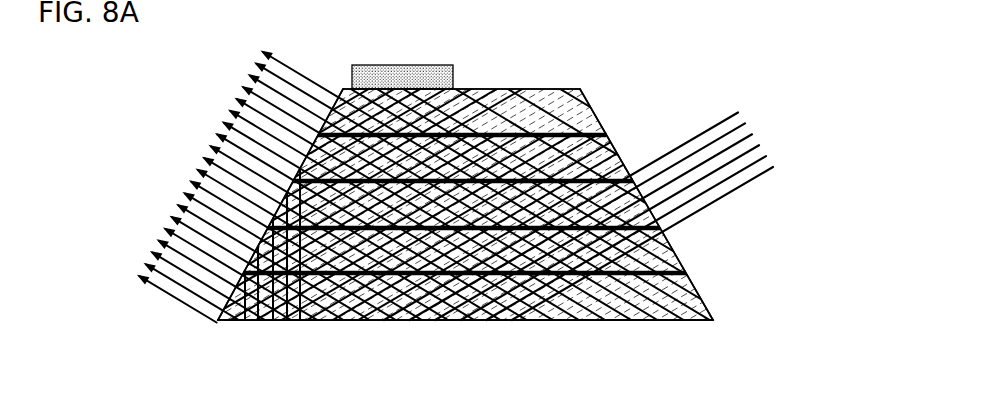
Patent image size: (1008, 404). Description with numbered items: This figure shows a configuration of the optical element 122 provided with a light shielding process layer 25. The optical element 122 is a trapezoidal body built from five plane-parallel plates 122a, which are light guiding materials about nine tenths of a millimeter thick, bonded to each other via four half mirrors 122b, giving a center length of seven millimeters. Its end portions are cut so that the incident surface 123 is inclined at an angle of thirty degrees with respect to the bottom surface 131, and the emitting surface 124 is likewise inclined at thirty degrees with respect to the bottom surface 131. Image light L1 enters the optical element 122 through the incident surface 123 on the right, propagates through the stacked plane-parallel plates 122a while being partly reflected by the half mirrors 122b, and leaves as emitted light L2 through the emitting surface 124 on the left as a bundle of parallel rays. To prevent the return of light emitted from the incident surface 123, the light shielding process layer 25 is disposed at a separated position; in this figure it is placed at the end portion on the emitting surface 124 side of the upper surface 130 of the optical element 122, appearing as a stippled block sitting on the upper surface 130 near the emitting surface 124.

The optical element 122 is at (626, 63).
The plane-parallel plates 122a is at (592, 108).
The half mirrors 122b is at (473, 95).
The incident surface 123 is at (593, 88).
The emitting surface 124 is at (333, 97).
The upper surface 130 is at (472, 88).
The bottom surface 131 is at (586, 322).
The light shielding process layer 25 is at (414, 65).
The image light L1 is at (715, 108).
The emitted light L2 is at (324, 58).